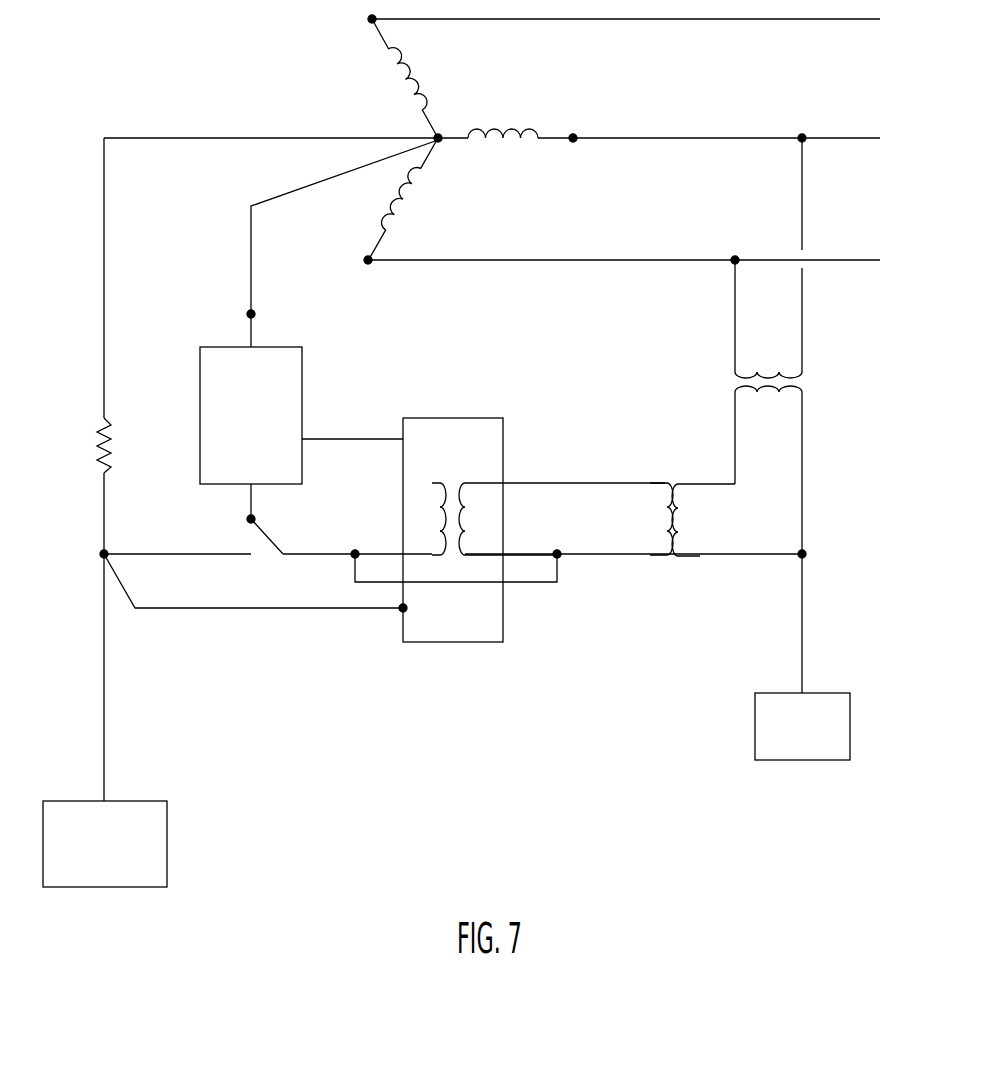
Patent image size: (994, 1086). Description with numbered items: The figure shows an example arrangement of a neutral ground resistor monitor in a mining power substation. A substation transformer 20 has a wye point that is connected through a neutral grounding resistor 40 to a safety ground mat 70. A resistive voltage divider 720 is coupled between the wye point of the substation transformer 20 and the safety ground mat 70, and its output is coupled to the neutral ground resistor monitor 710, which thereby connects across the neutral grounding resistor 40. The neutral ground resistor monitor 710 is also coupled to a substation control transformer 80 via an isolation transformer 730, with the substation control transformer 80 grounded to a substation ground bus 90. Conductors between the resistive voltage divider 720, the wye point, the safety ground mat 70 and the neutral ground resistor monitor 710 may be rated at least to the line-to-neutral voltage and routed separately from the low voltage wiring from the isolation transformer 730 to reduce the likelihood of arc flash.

The substation transformer 20 is at (436, 73).
The neutral grounding resistor 40 is at (84, 455).
The safety ground mat 70 is at (167, 840).
The substation control transformer 80 is at (714, 382).
The substation ground bus 90 is at (755, 718).
The neutral ground resistor monitor 710 is at (503, 437).
The resistive voltage divider 720 is at (302, 392).
The isolation transformer 730 is at (684, 470).